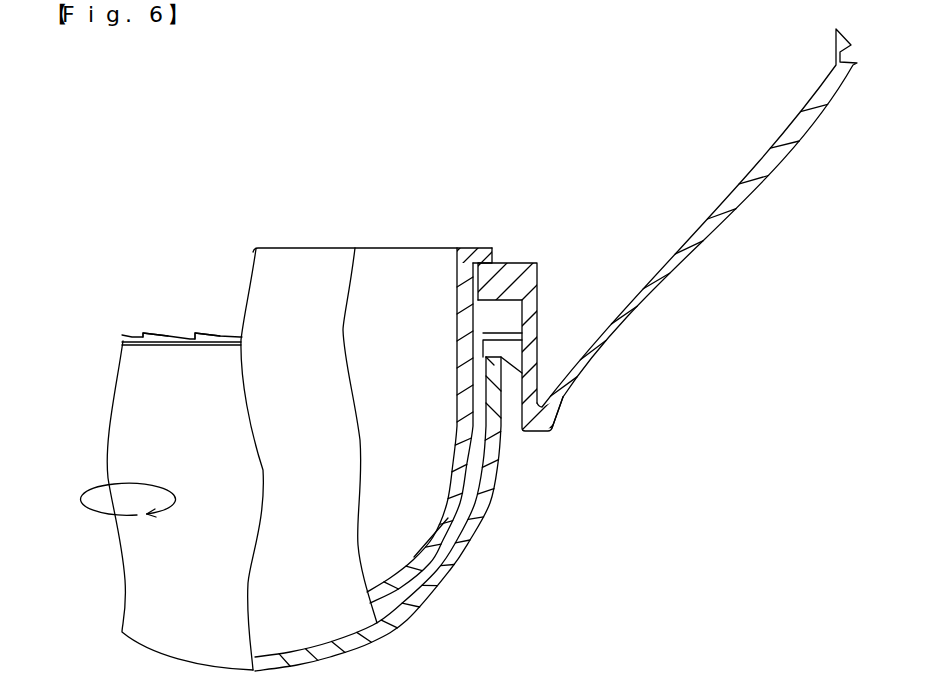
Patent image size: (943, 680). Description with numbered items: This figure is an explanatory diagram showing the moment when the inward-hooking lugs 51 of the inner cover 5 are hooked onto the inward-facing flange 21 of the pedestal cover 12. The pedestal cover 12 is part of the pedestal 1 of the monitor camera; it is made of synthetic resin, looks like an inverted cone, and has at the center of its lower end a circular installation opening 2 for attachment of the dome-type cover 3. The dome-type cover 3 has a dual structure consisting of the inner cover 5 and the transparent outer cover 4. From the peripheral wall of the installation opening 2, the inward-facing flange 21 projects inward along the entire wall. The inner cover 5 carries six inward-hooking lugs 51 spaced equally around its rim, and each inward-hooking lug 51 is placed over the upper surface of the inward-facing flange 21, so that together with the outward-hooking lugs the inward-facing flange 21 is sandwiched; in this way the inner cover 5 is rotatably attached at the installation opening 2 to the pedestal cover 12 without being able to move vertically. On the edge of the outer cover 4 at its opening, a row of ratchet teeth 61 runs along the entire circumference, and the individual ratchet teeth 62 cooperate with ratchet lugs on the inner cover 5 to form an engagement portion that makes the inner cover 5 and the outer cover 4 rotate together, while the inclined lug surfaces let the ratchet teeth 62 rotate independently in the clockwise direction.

The pedestal 1 is at (697, 303).
The pedestal cover 12 is at (618, 338).
The installation opening 2 is at (512, 417).
The inward-facing flange 21 is at (492, 280).
The dome-type cover 3 is at (411, 459).
The outer cover 4 is at (490, 508).
The inner cover 5 is at (431, 558).
The inward-hooking lug 51 is at (465, 252).
The row of ratchet teeth 61 is at (125, 233).
The ratchet teeth 62 is at (133, 335).